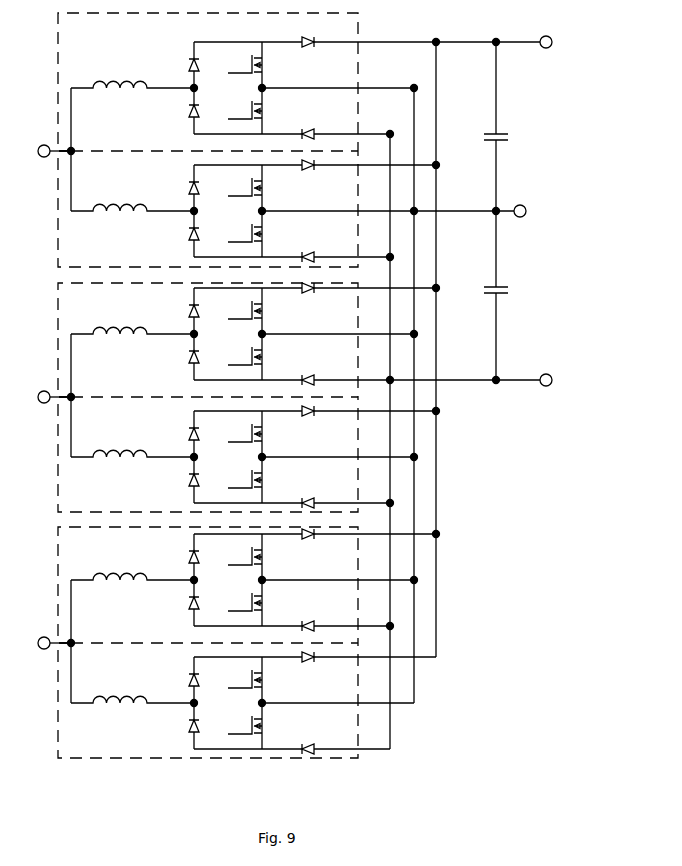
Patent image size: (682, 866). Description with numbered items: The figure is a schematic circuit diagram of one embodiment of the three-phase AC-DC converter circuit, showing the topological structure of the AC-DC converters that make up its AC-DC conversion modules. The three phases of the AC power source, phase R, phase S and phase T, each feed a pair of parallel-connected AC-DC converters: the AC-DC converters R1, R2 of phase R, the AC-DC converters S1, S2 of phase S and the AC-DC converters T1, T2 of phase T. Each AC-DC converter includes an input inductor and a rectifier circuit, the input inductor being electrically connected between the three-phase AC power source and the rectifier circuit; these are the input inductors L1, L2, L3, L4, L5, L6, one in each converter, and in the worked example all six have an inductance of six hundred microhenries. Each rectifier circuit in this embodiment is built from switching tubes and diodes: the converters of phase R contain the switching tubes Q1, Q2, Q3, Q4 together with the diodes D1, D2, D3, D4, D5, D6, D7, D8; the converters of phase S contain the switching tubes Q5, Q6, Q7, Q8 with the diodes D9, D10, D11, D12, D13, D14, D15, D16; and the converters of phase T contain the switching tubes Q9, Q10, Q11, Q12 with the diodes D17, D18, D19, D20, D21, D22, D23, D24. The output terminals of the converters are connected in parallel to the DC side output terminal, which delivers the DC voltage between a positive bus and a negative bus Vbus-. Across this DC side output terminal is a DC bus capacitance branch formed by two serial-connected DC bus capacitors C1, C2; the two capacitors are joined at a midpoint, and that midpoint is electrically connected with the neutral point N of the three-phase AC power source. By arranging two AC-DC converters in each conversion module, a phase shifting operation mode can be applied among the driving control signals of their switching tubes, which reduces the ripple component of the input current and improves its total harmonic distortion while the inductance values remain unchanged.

The phase R is at (47, 151).
The phase S is at (47, 397).
The phase T is at (46, 643).
The neutral point N is at (529, 211).
The negative DC bus terminal Vbus- is at (571, 380).
The AC-DC converter R1 is at (208, 82).
The AC-DC converter R2 is at (208, 209).
The AC-DC converter S1 is at (208, 340).
The AC-DC converter S2 is at (208, 455).
The AC-DC converter T1 is at (208, 585).
The AC-DC converter T2 is at (208, 700).
The DC bus capacitor C1 is at (482, 137).
The DC bus capacitor C2 is at (482, 290).
The input inductor L1 is at (132, 74).
The input inductor L2 is at (132, 197).
The input inductor L3 is at (132, 320).
The input inductor L4 is at (132, 443).
The input inductor L5 is at (132, 566).
The input inductor L6 is at (132, 689).
The diode D1 is at (183, 65).
The diode D2 is at (183, 111).
The diode D3 is at (310, 34).
The diode D4 is at (310, 125).
The diode D5 is at (183, 188).
The diode D6 is at (183, 234).
The diode D7 is at (310, 176).
The diode D8 is at (310, 248).
The diode D9 is at (183, 311).
The diode D10 is at (178, 357).
The diode D11 is at (310, 299).
The diode D12 is at (310, 370).
The diode D13 is at (178, 434).
The diode D14 is at (178, 480).
The diode D15 is at (310, 423).
The diode D16 is at (310, 494).
The diode D17 is at (178, 557).
The diode D18 is at (178, 603).
The diode D19 is at (310, 545).
The diode D20 is at (310, 617).
The diode D21 is at (178, 680).
The diode D22 is at (178, 726).
The diode D23 is at (310, 668).
The diode D24 is at (310, 740).
The switching transistor Q1 is at (242, 64).
The switching transistor Q2 is at (242, 110).
The switching transistor Q3 is at (242, 187).
The switching transistor Q4 is at (242, 233).
The switching transistor Q5 is at (242, 310).
The switching transistor Q6 is at (242, 356).
The switching transistor Q7 is at (242, 433).
The switching transistor Q8 is at (242, 479).
The switching transistor Q9 is at (242, 556).
The switching transistor Q10 is at (240, 602).
The switching transistor Q11 is at (240, 679).
The switching transistor Q12 is at (240, 725).